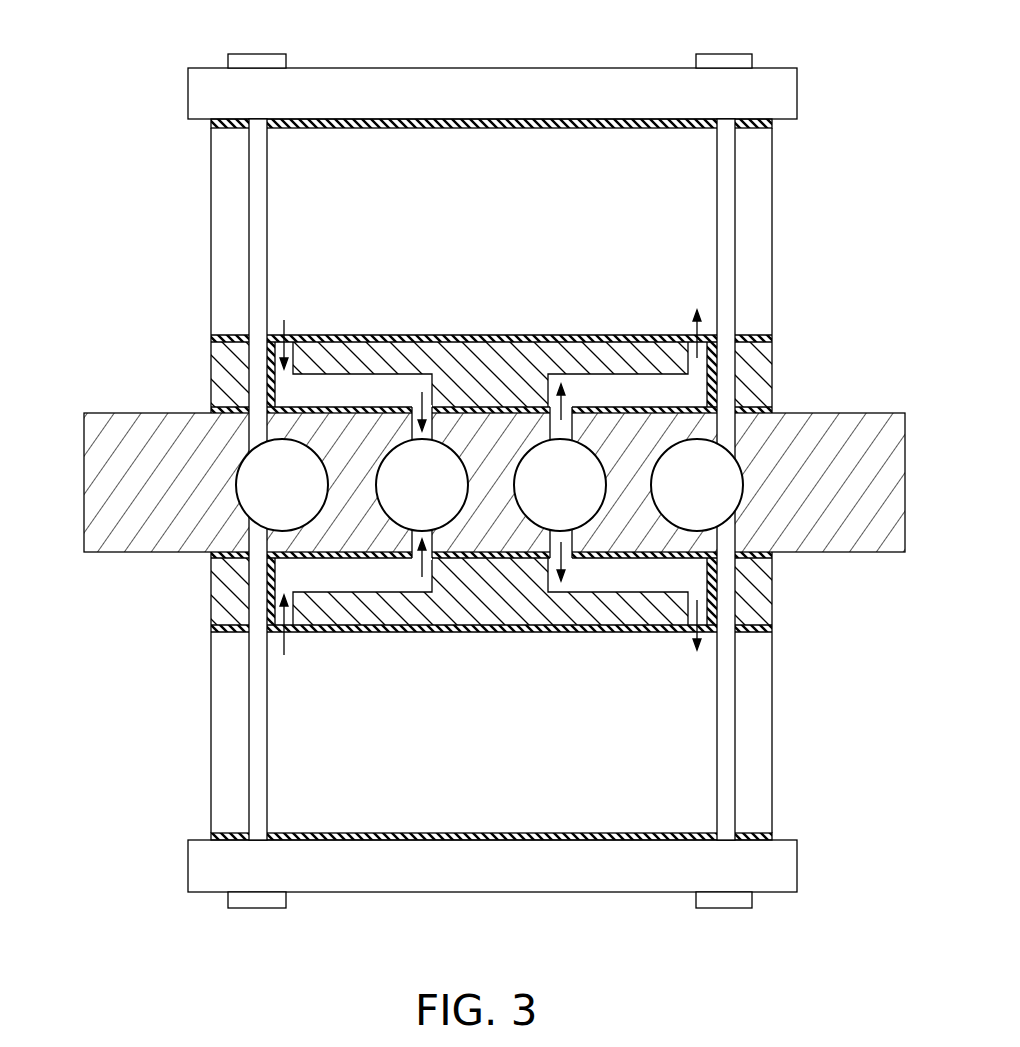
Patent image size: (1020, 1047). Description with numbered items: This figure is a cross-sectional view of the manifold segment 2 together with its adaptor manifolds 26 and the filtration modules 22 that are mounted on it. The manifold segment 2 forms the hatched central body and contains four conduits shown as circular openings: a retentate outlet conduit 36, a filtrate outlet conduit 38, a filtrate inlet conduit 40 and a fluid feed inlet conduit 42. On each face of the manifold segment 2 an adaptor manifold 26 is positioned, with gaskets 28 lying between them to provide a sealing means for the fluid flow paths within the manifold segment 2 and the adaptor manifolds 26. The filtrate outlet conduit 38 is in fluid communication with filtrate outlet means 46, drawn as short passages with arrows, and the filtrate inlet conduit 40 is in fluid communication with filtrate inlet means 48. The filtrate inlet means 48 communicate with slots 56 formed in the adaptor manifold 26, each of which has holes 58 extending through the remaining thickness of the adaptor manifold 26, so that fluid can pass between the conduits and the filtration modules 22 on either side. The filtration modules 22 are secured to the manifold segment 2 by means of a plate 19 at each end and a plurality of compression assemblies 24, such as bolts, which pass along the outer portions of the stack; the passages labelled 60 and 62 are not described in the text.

The manifold segment 2 is at (170, 413).
The plate 19 is at (800, 92).
The filtration modules 22 is at (283, 218).
The compression assemblies 24 is at (262, 54).
The adaptor manifold 26 is at (775, 373).
The gaskets 28 is at (773, 412).
The retentate outlet conduit 36 is at (308, 500).
The filtrate outlet conduit 38 is at (448, 500).
The filtrate inlet conduit 40 is at (586, 500).
The fluid feed inlet conduit 42 is at (723, 500).
The filtrate outlet means 46 is at (415, 410).
The filtrate inlet means 48 is at (570, 405).
The slots 56 is at (592, 380).
The holes 58 is at (686, 355).
The inlet channel 60 is at (368, 374).
The inlet port 62 is at (285, 325).